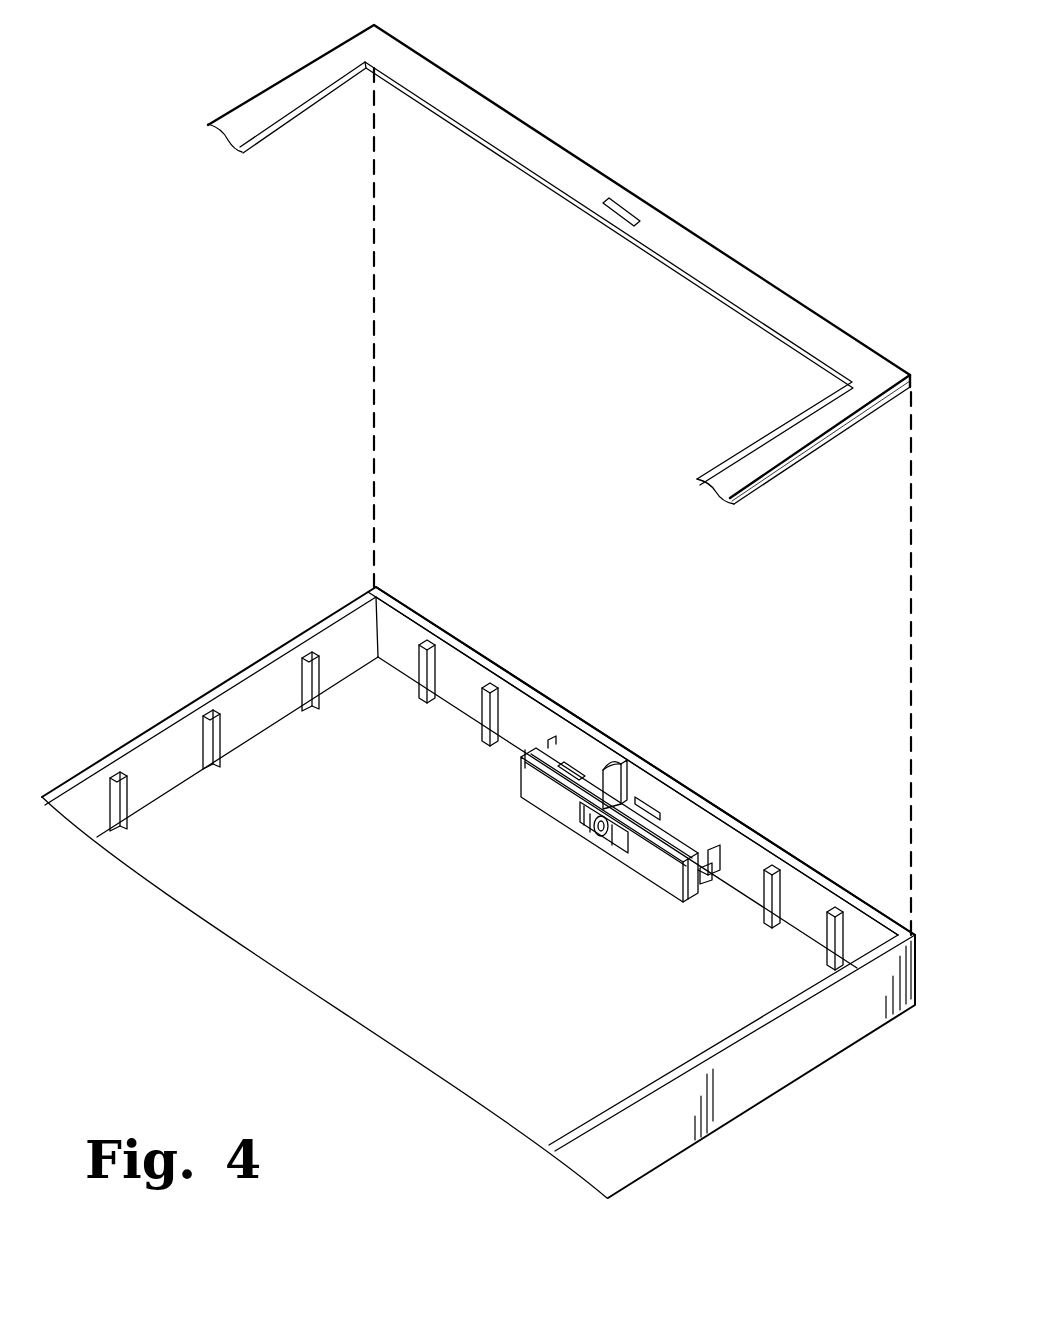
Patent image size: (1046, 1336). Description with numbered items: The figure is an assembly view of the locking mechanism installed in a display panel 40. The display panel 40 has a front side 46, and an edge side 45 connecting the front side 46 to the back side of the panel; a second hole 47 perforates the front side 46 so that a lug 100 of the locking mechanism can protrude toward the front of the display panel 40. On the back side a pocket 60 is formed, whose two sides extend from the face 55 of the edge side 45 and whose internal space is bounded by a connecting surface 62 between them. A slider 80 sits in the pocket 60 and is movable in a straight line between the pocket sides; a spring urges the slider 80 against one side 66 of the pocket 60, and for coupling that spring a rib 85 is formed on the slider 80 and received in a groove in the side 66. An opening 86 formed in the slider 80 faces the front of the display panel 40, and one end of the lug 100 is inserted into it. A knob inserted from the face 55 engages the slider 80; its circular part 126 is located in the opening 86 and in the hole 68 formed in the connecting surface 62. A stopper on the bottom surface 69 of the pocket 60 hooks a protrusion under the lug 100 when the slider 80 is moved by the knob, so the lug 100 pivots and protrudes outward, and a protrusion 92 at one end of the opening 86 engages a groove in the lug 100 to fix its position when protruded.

The display panel 40 is at (281, 31).
The edge side 45 is at (746, 1101).
The front side 46 is at (800, 453).
The second hole 47 is at (622, 210).
The face of the edge side 55 is at (863, 902).
The pocket 60 is at (527, 795).
The surface 62 is at (658, 870).
The side of the pocket 66 is at (692, 897).
The hole 68 is at (622, 846).
The bottom surface 69 is at (605, 840).
The slider 80 is at (533, 733).
The rib 85 is at (716, 868).
The opening 86 is at (578, 768).
The protrusion 92 is at (587, 822).
The lug 100 is at (624, 750).
The circular part 126 is at (590, 835).